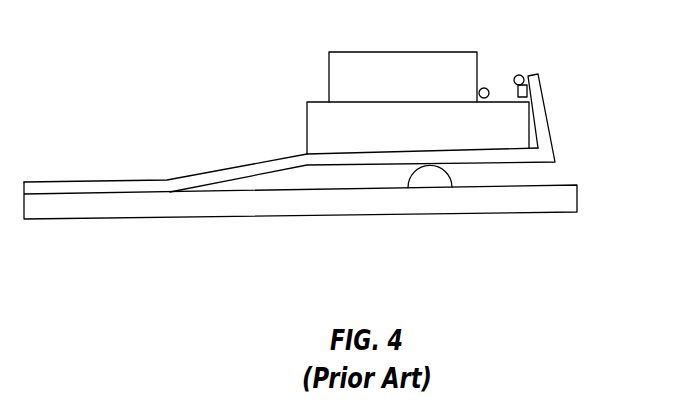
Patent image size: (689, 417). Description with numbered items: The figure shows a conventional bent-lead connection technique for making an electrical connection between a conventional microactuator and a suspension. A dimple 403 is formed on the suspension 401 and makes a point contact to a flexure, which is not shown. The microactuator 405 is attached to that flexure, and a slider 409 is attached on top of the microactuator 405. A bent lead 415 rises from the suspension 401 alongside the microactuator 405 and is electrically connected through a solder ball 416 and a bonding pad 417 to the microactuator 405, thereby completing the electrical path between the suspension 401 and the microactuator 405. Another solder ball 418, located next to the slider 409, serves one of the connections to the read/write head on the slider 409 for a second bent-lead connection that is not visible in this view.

The suspension 401 is at (568, 199).
The dimple 403 is at (428, 178).
The microactuator 405 is at (310, 135).
The slider 409 is at (342, 78).
The bent lead 415 is at (549, 128).
The solder ball 416 is at (518, 75).
The bonding pad 417 is at (528, 92).
The solder ball 418 is at (484, 87).